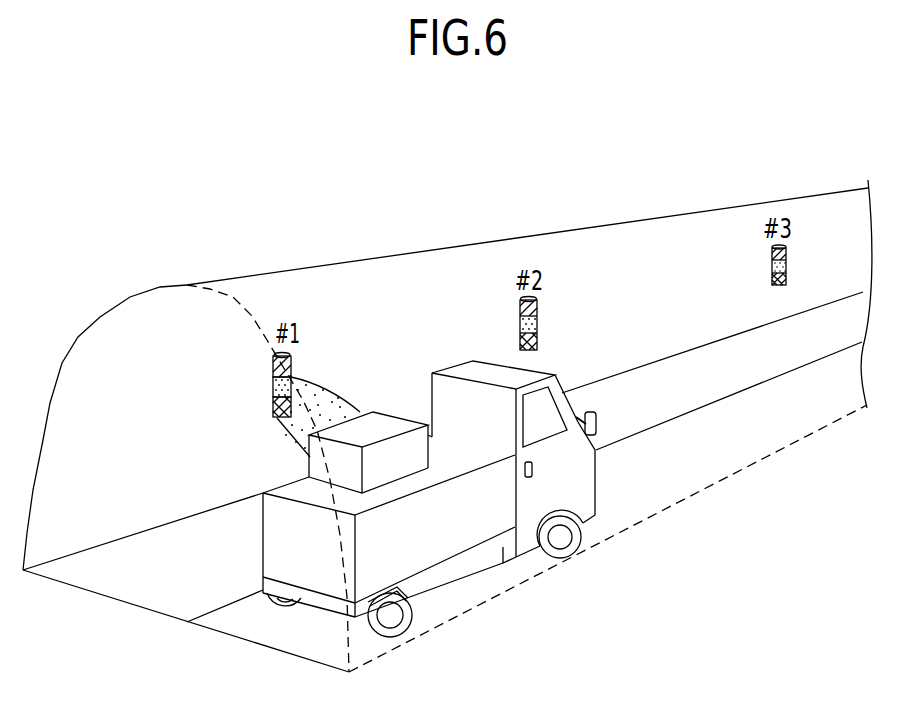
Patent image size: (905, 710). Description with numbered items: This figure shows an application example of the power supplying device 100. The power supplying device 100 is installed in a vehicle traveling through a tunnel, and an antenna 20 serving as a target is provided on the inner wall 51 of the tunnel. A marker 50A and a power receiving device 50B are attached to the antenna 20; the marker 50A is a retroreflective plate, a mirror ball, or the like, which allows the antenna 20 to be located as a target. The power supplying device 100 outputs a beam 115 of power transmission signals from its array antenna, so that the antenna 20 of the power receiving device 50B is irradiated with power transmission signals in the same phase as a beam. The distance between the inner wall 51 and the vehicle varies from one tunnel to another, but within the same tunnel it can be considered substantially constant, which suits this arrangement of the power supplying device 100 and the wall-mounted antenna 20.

The inner wall of a tunnel 51 is at (125, 329).
The marker 50A is at (273, 360).
The power receiving device 50B is at (273, 387).
The antenna 20 is at (273, 407).
The beam 115 is at (315, 382).
The power supplying device 100 is at (387, 418).